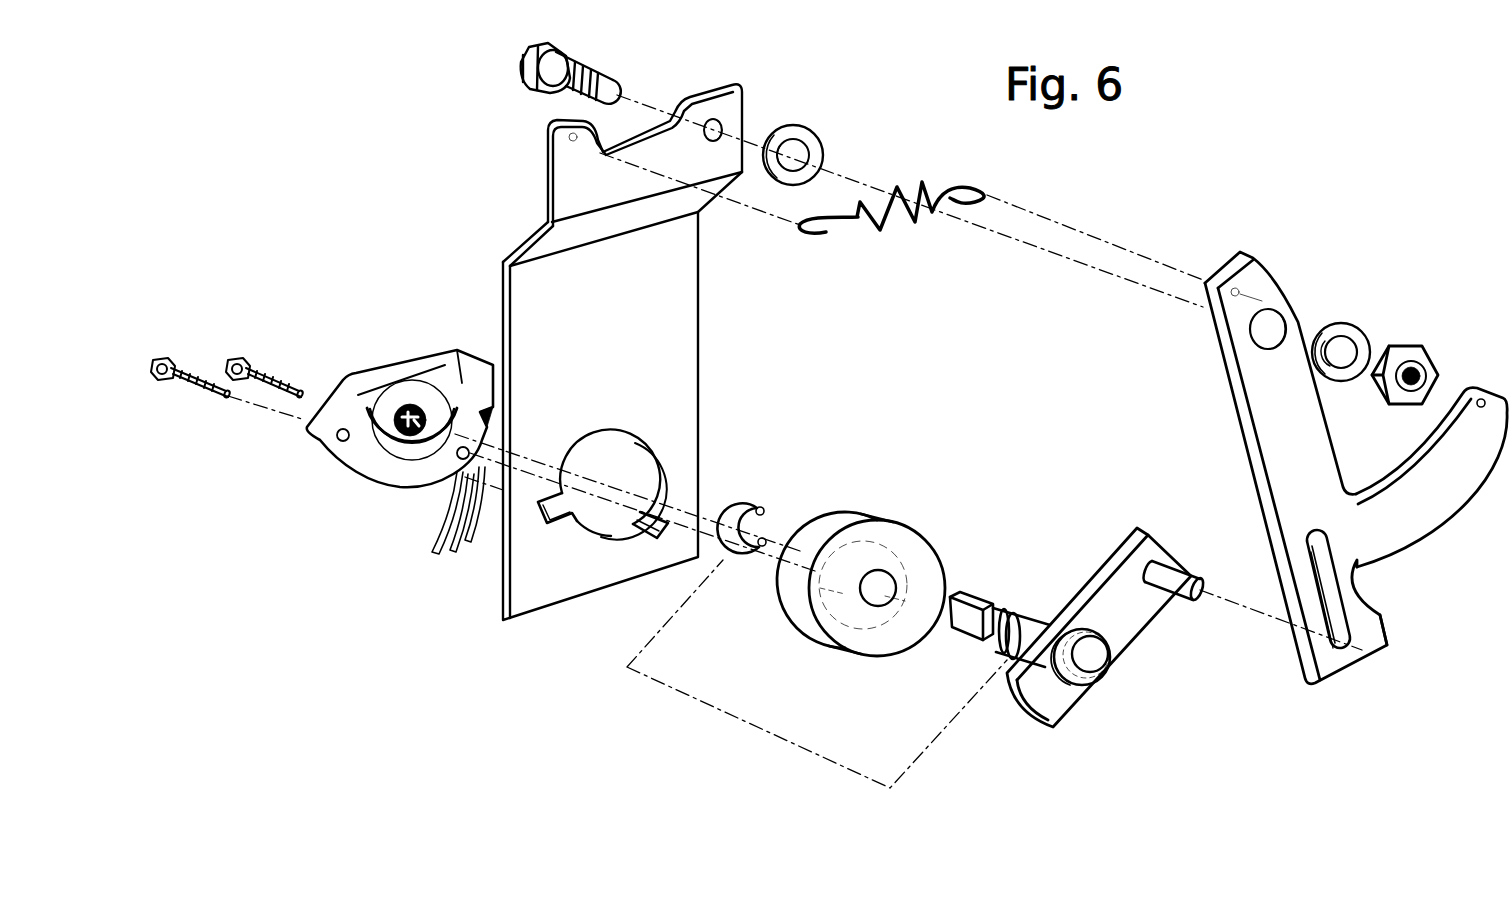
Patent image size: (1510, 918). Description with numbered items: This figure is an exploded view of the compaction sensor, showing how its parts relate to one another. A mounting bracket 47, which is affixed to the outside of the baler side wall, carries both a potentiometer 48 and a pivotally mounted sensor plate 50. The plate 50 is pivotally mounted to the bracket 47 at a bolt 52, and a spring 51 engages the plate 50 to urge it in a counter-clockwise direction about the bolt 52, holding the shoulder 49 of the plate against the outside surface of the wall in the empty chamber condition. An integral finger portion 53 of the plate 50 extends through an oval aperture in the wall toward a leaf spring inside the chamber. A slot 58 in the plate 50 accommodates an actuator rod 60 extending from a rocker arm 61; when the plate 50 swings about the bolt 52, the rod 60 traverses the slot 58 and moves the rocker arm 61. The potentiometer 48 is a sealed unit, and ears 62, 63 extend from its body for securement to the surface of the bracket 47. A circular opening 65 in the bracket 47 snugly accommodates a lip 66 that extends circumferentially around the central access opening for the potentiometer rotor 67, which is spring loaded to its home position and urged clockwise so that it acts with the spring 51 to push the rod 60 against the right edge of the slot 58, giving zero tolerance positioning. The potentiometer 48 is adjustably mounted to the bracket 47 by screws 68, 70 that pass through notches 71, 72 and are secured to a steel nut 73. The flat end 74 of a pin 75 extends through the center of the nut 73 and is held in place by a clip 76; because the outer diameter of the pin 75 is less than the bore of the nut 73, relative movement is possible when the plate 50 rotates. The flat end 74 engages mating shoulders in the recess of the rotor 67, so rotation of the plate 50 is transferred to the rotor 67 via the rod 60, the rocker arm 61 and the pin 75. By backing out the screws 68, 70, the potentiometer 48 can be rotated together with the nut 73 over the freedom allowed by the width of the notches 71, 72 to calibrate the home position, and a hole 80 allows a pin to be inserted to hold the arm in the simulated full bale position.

The mounting bracket 47 is at (563, 600).
The potentiometer 48 is at (370, 429).
The shoulder 49 is at (1385, 627).
The sensor plate 50 is at (1252, 402).
The spring 51 is at (923, 190).
The bolt 52 is at (520, 76).
The finger portion 53 is at (1380, 522).
The slot 58 is at (1318, 568).
The actuator rod 60 is at (1177, 578).
The rocker arm 61 is at (1137, 633).
The ear 62 is at (323, 437).
The ear 63 is at (458, 473).
The circular opening 65 is at (620, 440).
The lip 66 is at (455, 373).
The potentiometer rotor 67 is at (405, 407).
The screw 68 is at (173, 358).
The screw 70 is at (243, 367).
The notch 71 is at (548, 493).
The notch 72 is at (640, 533).
The steel nut 73 is at (860, 510).
The flat end 74 is at (970, 617).
The pin 75 is at (1043, 620).
The clip 76 is at (743, 503).
The hole 80 is at (1483, 402).